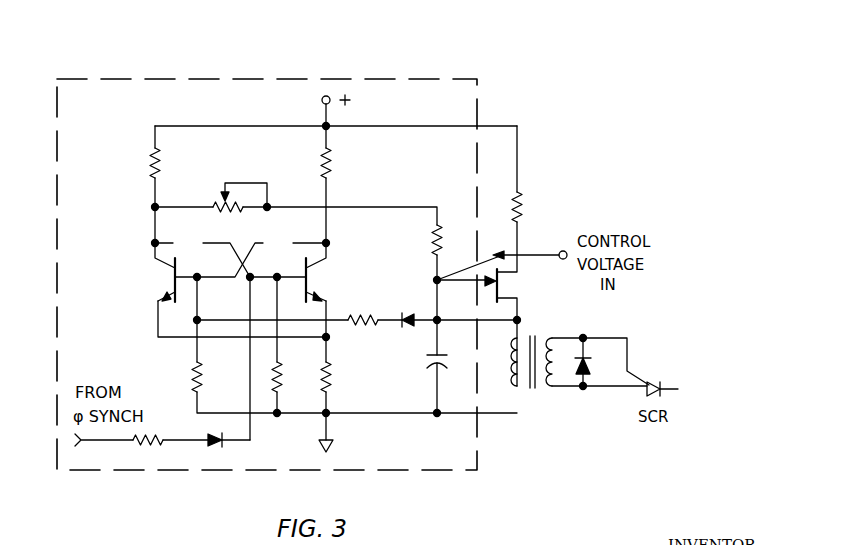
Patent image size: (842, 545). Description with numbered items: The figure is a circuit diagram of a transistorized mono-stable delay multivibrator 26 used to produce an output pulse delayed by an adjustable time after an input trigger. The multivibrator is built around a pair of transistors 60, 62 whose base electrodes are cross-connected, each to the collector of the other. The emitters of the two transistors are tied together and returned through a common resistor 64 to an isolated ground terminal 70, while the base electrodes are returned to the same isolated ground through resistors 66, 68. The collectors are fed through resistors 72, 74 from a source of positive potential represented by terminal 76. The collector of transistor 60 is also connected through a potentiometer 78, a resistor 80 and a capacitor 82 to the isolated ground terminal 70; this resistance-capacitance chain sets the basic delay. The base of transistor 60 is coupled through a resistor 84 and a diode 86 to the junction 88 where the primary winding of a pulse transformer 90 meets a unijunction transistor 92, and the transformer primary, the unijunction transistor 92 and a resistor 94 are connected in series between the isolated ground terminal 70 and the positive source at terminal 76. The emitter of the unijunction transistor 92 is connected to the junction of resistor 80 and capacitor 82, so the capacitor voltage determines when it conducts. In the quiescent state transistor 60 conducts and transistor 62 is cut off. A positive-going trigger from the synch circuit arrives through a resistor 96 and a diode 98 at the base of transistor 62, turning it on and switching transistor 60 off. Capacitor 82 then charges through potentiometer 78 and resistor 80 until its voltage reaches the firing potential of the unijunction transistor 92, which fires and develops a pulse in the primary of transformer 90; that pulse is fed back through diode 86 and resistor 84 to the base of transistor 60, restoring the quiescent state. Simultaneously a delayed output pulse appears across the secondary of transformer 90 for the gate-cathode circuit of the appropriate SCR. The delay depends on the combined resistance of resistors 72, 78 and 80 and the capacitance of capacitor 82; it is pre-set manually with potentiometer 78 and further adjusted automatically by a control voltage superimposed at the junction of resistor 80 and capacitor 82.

The delay multivibrator 26 is at (318, 78).
The transistor 60 is at (170, 276).
The transistor 62 is at (309, 277).
The common resistor 64 is at (332, 362).
The resistor 66 is at (192, 378).
The resistor 68 is at (283, 372).
The isolated ground terminal 70 is at (333, 447).
The resistor 72 is at (162, 170).
The resistor 74 is at (333, 168).
The terminal 76 is at (321, 99).
The potentiometer 78 is at (242, 212).
The resistor 80 is at (432, 237).
The capacitor 82 is at (427, 362).
The resistor 84 is at (351, 315).
The diode 86 is at (398, 326).
The junction 88 is at (521, 320).
The pulse transformer 90 is at (535, 393).
The unijunction transistor 92 is at (507, 282).
The resistor 94 is at (523, 210).
The resistor 96 is at (155, 444).
The diode 98 is at (223, 444).